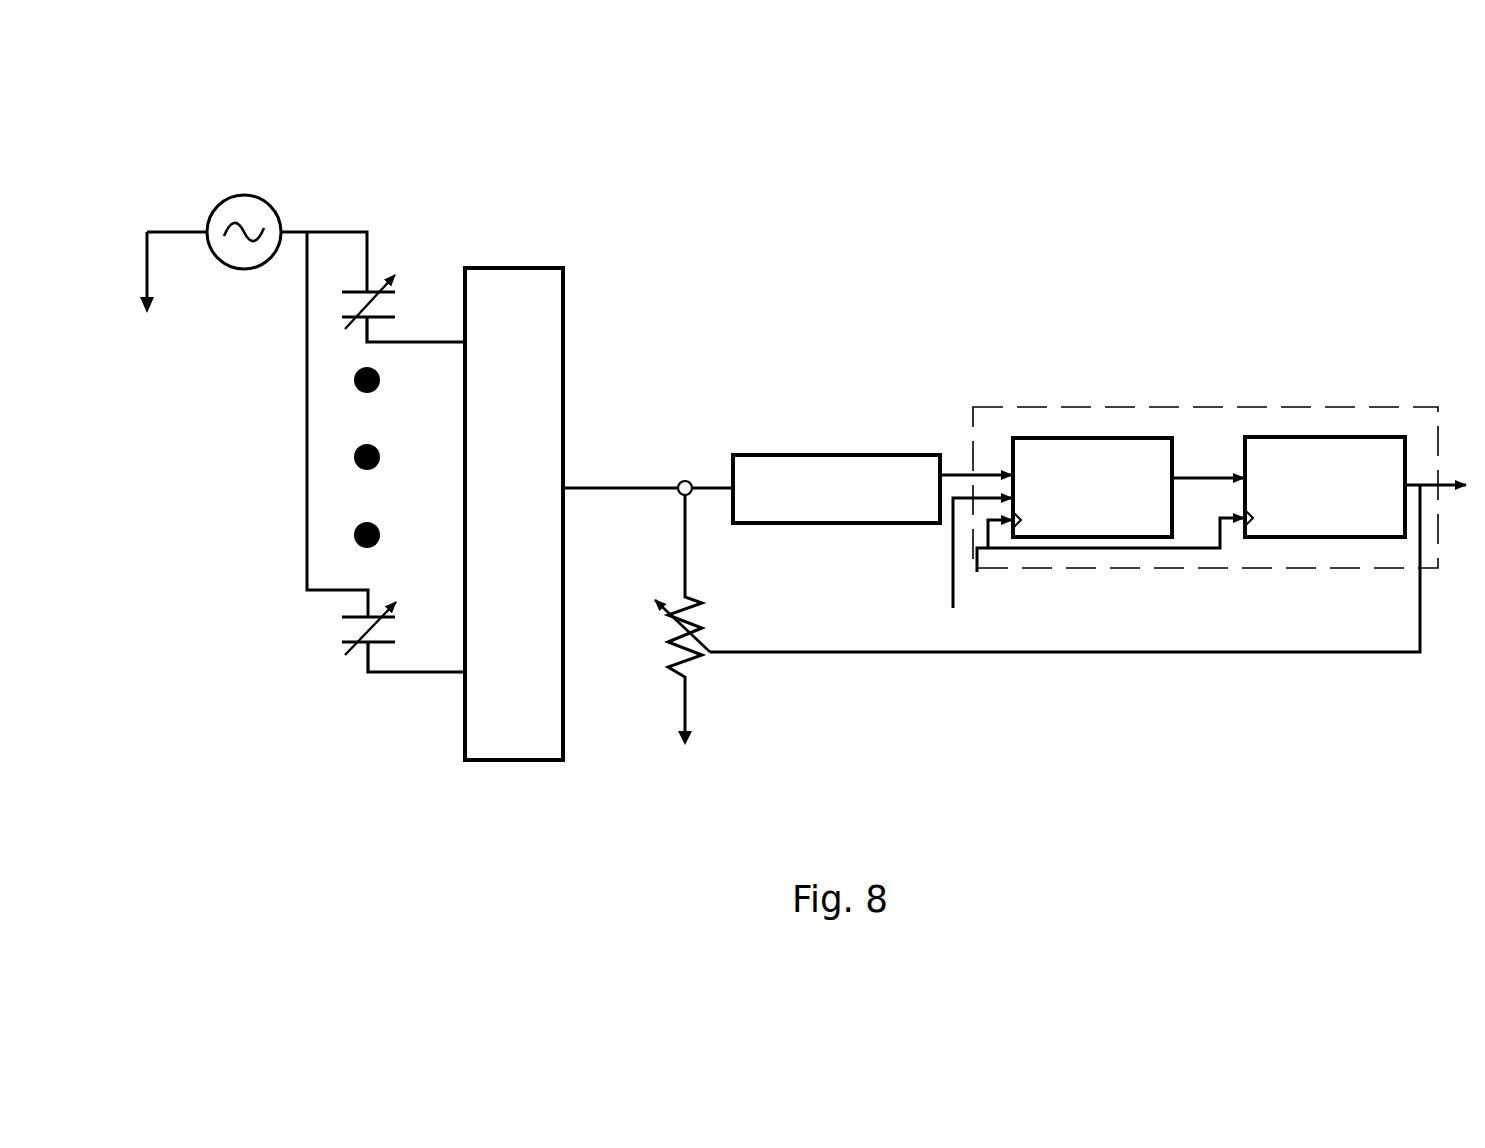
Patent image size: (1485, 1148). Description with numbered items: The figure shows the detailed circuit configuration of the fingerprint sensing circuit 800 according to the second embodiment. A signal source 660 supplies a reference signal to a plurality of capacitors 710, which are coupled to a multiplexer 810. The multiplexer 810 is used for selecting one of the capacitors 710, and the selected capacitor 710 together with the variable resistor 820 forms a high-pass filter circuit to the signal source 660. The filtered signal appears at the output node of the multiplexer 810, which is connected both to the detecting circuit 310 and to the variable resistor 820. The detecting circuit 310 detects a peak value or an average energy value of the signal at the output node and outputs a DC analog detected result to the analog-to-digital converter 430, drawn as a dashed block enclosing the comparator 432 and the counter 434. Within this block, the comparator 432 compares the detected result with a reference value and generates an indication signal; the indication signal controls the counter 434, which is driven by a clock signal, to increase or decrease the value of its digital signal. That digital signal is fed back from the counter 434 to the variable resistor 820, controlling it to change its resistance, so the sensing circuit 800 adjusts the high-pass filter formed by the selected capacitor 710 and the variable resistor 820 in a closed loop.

The fingerprint sensing circuit 800 is at (1080, 158).
The signal source 660 is at (257, 197).
The capacitors 710 is at (385, 259).
The multiplexer 810 is at (563, 268).
The detecting circuit 310 is at (828, 453).
The variable resistor 820 is at (706, 612).
The analog-to-digital converter 430 is at (1205, 438).
The comparator 432 is at (1078, 438).
The counter 434 is at (1353, 437).